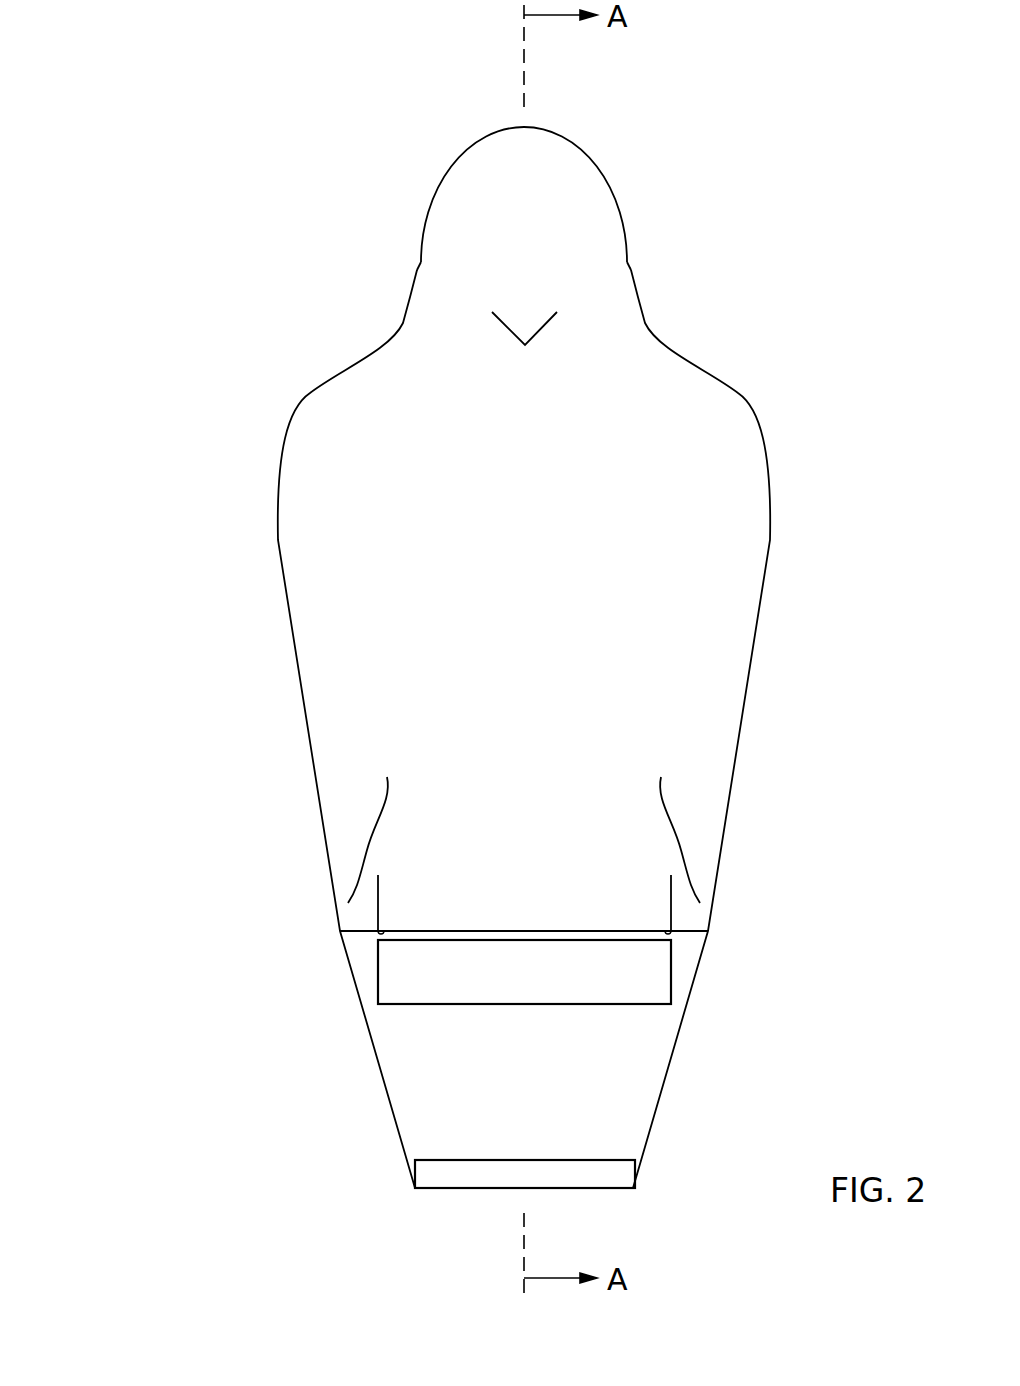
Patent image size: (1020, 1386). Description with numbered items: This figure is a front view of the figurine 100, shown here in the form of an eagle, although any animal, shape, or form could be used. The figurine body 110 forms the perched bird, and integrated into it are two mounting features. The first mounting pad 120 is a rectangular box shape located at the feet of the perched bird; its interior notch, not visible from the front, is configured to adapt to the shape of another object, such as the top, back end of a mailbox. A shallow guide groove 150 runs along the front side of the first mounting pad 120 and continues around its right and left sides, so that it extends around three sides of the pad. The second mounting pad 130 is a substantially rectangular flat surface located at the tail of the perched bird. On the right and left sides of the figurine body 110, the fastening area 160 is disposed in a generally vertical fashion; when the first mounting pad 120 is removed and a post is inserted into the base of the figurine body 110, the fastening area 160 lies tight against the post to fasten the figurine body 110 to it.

The figurine 100 is at (148, 121).
The figurine body 110 is at (277, 508).
The first mounting pad 120 is at (390, 1006).
The second mounting pad 130 is at (507, 1158).
The guide groove 150 is at (672, 935).
The fastening area 160 is at (378, 912).